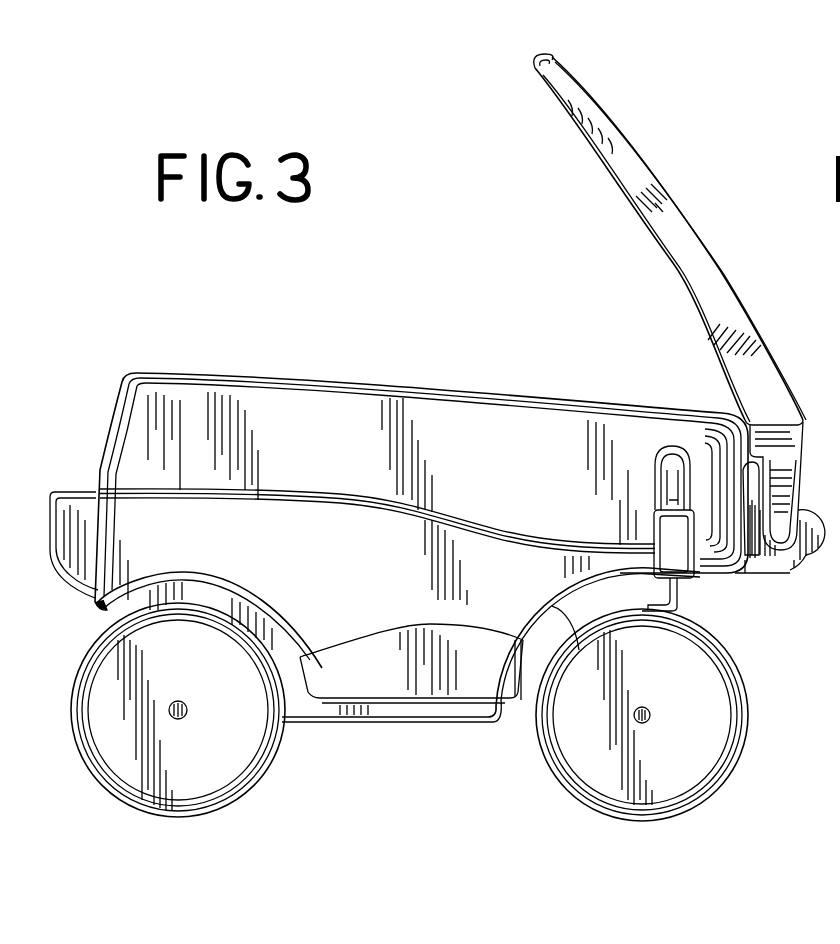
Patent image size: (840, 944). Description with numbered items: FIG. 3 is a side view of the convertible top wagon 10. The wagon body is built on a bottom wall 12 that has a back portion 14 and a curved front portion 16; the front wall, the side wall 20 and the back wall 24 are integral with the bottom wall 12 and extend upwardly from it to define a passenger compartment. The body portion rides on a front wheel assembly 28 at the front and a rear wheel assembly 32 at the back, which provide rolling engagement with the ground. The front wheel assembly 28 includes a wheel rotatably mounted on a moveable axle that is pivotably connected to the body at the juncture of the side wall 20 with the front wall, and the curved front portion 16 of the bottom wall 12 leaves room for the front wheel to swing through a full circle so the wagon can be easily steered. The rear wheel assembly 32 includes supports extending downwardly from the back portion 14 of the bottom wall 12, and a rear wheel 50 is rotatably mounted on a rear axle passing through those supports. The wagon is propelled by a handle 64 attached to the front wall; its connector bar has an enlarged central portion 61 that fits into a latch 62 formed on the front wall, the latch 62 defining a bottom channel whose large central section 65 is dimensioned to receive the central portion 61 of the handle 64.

The convertible top wagon 10 is at (653, 128).
The bottom wall 12 is at (419, 725).
The back portion 14 is at (282, 724).
The curved front portion 16 is at (550, 606).
The side wall 20 is at (332, 445).
The back wall 24 is at (112, 412).
The front wheel assembly 28 is at (721, 776).
The rear wheel assembly 32 is at (243, 794).
The rear wheel 50 is at (110, 743).
The enlarged central portion 61 is at (785, 560).
The latch 62 is at (815, 556).
The handle 64 is at (632, 173).
The large central section 65 is at (782, 520).